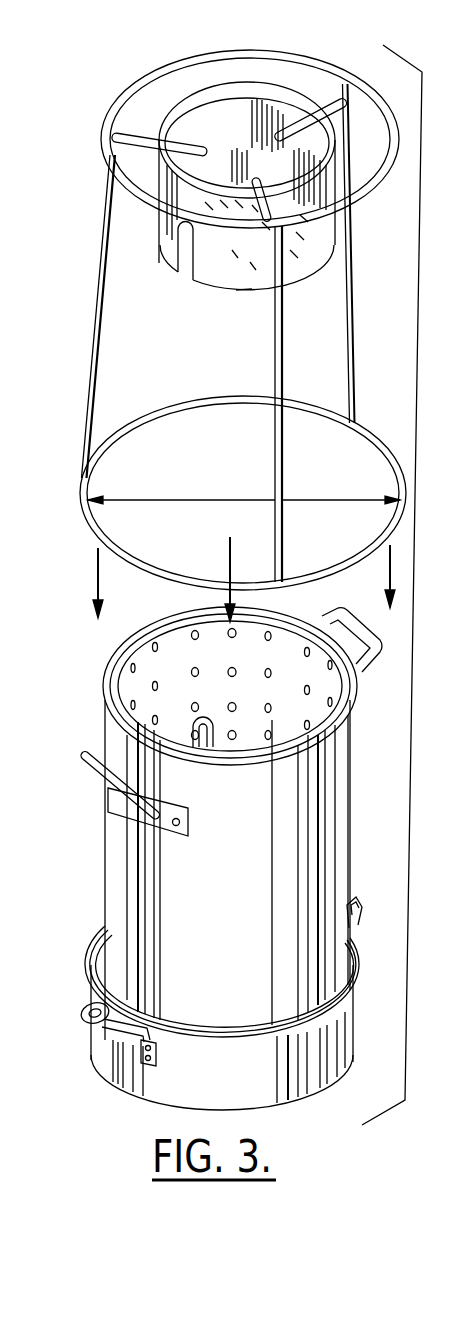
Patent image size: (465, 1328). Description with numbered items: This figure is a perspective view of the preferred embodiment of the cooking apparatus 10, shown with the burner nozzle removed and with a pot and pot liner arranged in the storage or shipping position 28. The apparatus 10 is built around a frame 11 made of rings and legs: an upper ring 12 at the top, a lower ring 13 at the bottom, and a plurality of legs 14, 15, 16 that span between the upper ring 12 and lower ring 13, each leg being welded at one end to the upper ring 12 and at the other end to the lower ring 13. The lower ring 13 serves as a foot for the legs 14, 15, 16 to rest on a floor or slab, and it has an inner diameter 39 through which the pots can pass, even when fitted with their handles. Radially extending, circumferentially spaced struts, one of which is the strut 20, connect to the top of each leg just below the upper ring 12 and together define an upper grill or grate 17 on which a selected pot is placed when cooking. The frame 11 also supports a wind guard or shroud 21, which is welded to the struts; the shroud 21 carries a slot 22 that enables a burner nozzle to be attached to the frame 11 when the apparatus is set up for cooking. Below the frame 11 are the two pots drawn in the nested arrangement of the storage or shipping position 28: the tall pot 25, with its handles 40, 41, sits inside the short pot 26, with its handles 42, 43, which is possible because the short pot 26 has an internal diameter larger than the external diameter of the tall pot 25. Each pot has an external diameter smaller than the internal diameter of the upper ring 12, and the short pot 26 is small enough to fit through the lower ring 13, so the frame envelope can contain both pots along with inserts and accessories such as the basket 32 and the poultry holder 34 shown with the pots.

The cooking apparatus 10 is at (462, 170).
The frame 11 is at (90, 423).
The upper ring 12 is at (295, 62).
The lower ring 13 is at (92, 523).
The leg 14 is at (97, 293).
The leg 15 is at (352, 348).
The leg 16 is at (274, 385).
The upper grill or grate 17 is at (147, 100).
The strut 20 is at (235, 222).
The wind guard or shroud 21 is at (240, 287).
The slot 22 is at (187, 275).
The tall pot 25 is at (222, 823).
The short pot 26 is at (238, 1083).
The storage or shipping position 28 is at (84, 916).
The basket 32 is at (142, 690).
The poultry holder 34 is at (222, 742).
The inner diameter 39 is at (220, 498).
The handle 40 is at (104, 814).
The handle 41 is at (370, 667).
The handle 42 is at (95, 1040).
The handle 43 is at (350, 898).